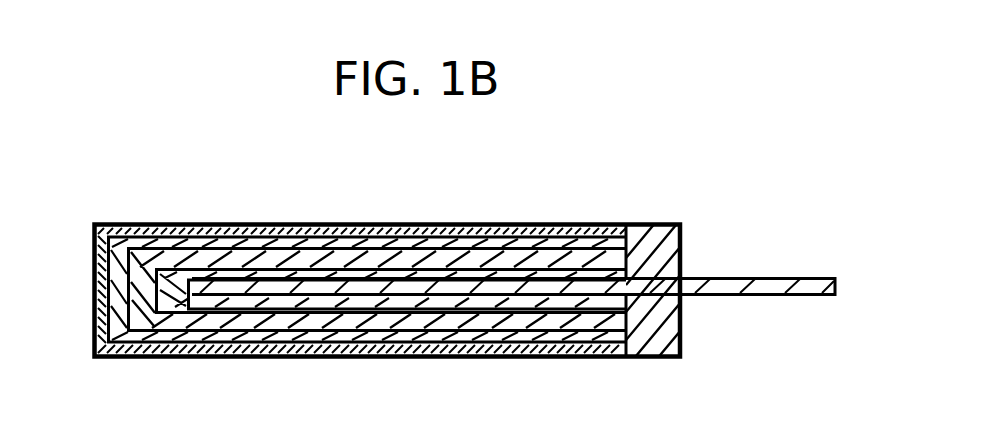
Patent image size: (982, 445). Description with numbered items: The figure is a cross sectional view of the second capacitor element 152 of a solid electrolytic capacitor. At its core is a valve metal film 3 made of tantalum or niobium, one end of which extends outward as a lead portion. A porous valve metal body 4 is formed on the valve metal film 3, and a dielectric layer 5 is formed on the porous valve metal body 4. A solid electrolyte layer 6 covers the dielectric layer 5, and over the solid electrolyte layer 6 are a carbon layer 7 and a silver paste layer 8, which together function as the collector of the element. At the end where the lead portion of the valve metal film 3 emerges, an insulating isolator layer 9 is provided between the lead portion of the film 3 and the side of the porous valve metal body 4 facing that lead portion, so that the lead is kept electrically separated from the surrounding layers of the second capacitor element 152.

The second capacitor element 152 is at (683, 179).
The valve metal film 3 is at (756, 283).
The porous valve metal body 4 is at (558, 268).
The dielectric layer 5 is at (442, 256).
The solid electrolyte layer 6 is at (373, 246).
The carbon layer 7 is at (196, 233).
The silver paste layer 8 is at (102, 227).
The insulating isolator layer 9 is at (653, 343).